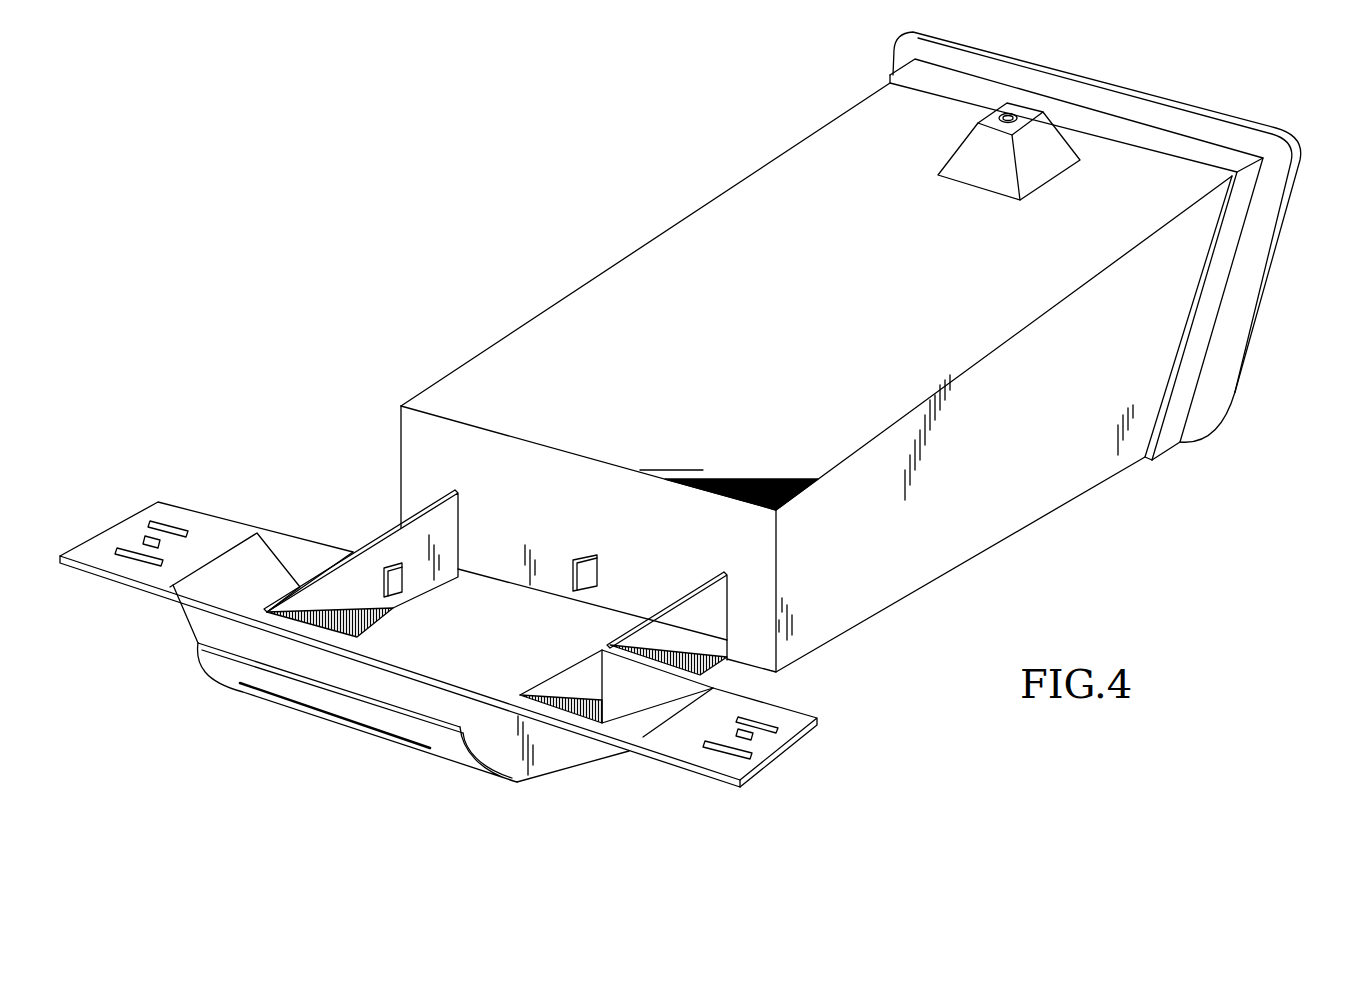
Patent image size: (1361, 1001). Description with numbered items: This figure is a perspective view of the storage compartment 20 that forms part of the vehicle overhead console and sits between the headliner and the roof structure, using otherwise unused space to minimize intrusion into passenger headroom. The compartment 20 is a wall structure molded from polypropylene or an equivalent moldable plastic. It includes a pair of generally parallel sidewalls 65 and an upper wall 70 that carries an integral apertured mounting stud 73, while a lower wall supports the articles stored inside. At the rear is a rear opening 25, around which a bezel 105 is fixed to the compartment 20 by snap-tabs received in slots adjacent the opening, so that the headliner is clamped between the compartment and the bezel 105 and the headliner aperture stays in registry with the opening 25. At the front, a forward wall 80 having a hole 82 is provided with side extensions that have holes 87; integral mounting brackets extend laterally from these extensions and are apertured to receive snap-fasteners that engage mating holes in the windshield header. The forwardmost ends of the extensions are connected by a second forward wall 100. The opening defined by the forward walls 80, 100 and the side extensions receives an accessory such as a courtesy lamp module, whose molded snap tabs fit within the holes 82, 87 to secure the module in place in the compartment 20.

The storage compartment 20 is at (655, 200).
The rear opening 25 is at (1115, 246).
The sidewalls 65 is at (1010, 508).
The upper wall 70 is at (829, 293).
The apertured mounting stud 73 is at (962, 148).
The forward wall 80 is at (471, 658).
The hole 82 is at (585, 590).
The holes 87 is at (404, 586).
The forward wall 100 is at (493, 733).
The bezel 105 is at (1241, 132).